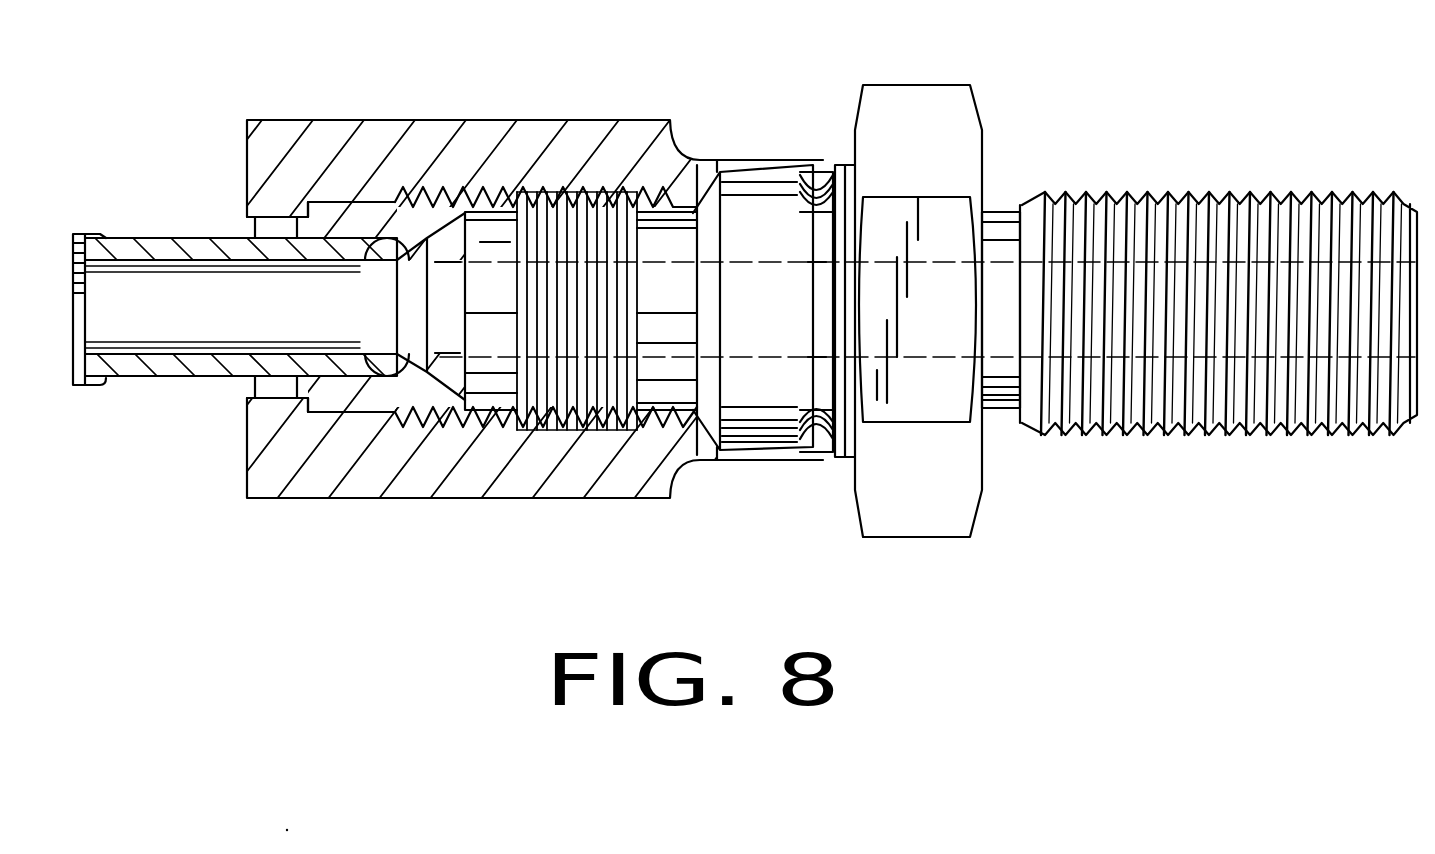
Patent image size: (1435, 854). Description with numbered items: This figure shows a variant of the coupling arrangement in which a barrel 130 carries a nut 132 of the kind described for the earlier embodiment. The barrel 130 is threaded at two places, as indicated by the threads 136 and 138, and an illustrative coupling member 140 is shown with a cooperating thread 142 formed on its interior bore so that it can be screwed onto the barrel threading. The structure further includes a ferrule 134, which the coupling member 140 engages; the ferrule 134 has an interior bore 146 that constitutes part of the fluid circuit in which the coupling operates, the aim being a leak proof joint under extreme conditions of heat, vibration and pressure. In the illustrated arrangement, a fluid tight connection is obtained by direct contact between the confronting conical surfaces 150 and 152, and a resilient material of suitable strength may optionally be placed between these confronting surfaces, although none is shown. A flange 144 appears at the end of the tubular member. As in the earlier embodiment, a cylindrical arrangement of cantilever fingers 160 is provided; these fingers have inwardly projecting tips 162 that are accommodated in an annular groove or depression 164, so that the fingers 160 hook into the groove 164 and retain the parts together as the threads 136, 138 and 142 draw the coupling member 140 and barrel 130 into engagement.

The barrel 130 is at (1008, 193).
The nut 132 is at (893, 88).
The ferrule 134 is at (353, 396).
The thread 136 is at (593, 416).
The thread 138 is at (1105, 388).
The coupling member 140 is at (282, 478).
The cooperating thread 142 is at (438, 428).
The flange 144 is at (136, 370).
The interior bore 146 is at (158, 300).
The conical surface 150 is at (458, 190).
The conical surface 152 is at (358, 253).
The cantilever fingers 160 is at (750, 165).
The inwardly projecting tips 162 is at (818, 173).
The annular groove 164 is at (806, 308).